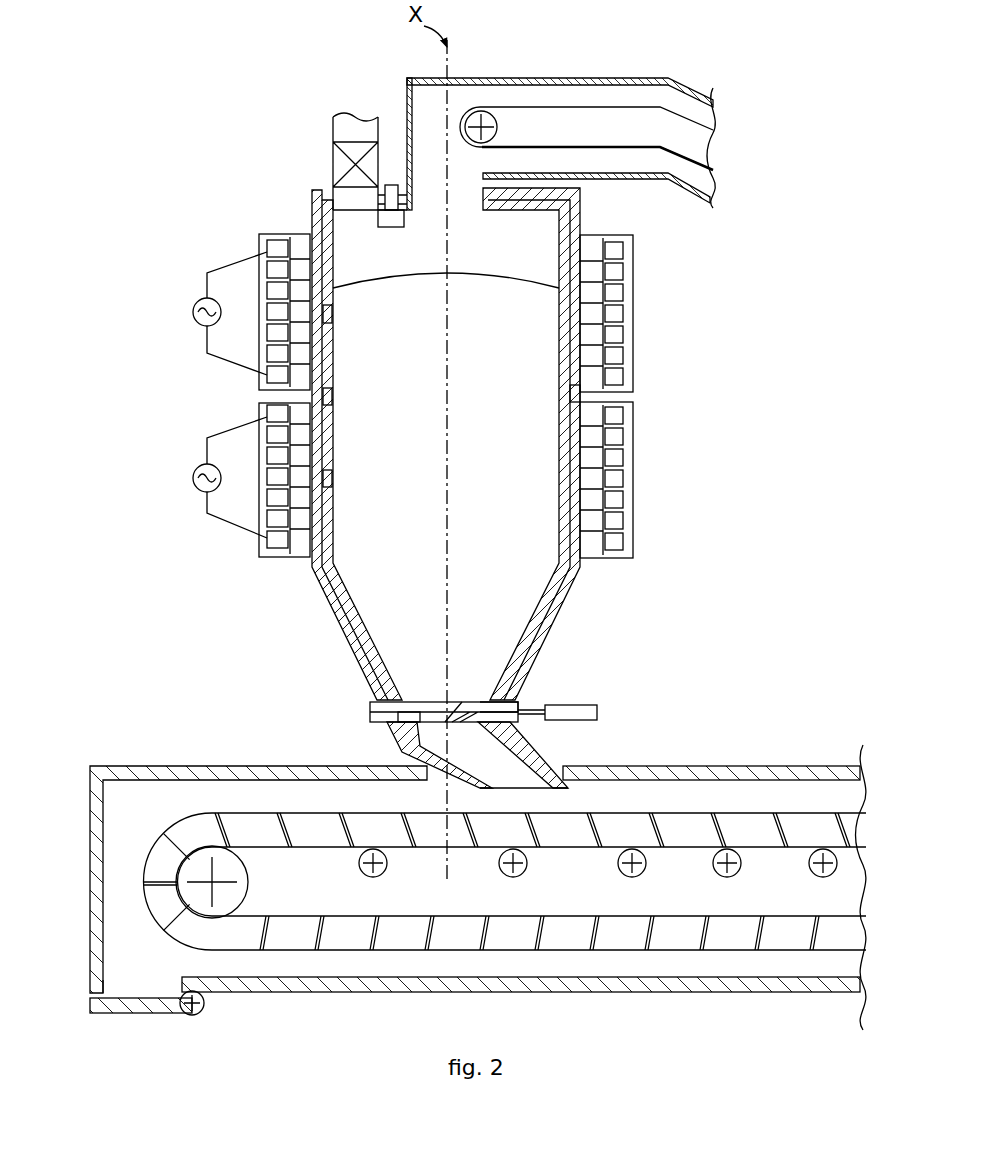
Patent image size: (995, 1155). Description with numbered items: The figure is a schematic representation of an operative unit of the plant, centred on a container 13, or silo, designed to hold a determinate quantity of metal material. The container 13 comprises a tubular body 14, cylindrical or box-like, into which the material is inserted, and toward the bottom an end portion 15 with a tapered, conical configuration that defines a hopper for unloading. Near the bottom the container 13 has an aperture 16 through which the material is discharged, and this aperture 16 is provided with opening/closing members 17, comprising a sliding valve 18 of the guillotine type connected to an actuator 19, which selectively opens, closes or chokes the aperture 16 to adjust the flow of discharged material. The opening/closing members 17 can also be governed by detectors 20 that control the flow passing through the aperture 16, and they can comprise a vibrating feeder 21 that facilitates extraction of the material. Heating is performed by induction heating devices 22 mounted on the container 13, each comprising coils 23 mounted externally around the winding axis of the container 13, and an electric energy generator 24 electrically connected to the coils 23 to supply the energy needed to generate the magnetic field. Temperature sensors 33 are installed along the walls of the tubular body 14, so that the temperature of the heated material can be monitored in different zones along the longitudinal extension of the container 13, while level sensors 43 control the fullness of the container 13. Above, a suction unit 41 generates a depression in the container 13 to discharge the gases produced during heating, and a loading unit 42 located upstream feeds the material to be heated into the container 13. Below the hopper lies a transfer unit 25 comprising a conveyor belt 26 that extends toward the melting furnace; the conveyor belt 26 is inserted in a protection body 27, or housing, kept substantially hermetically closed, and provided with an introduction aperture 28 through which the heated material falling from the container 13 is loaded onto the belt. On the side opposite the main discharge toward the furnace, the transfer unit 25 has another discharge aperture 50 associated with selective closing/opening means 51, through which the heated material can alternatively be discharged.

The container 13 is at (318, 602).
The tubular body 14 is at (575, 393).
The end portion 15 is at (549, 592).
The aperture 16 is at (402, 702).
The opening/closing members 17 is at (368, 708).
The sliding valve 18 is at (505, 705).
The actuator 19 is at (588, 712).
The detectors 20 is at (409, 719).
The vibrating feeder 21 is at (508, 738).
The induction heating device 22 is at (640, 341).
The coils 23 is at (617, 292).
The electric energy generator 24 is at (191, 316).
The transfer unit 25 is at (698, 750).
The conveyor belt 26 is at (749, 846).
The protection body 27 is at (140, 771).
The introduction aperture 28 is at (432, 775).
The temperature sensors 33 is at (326, 314).
The suction unit 41 is at (332, 128).
The loading unit 42 is at (591, 73).
The level sensors 43 is at (392, 196).
The discharge aperture 50 is at (103, 976).
The selective closing/opening means 51 is at (140, 1009).